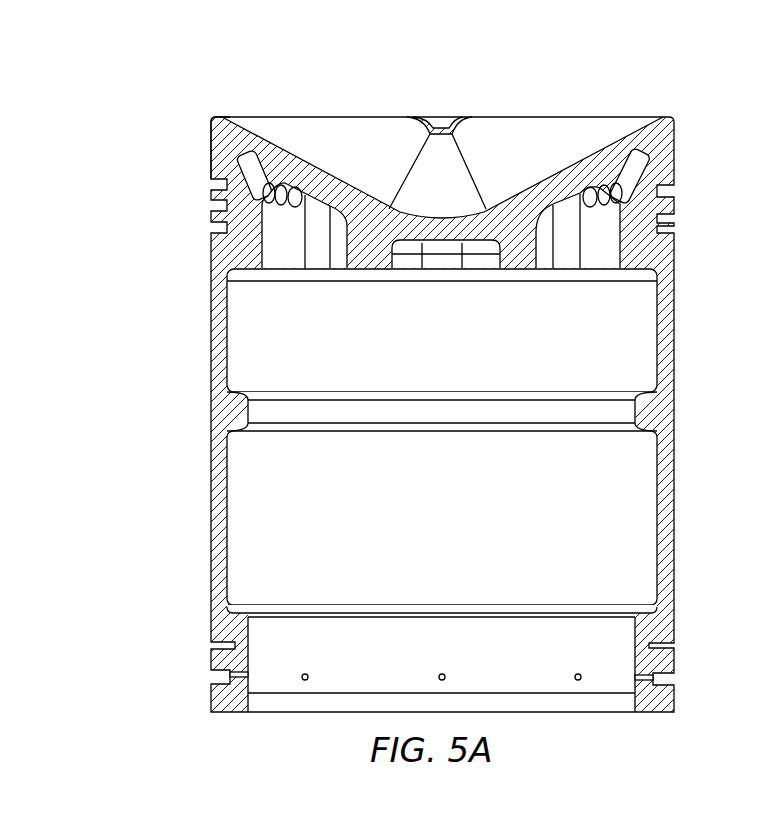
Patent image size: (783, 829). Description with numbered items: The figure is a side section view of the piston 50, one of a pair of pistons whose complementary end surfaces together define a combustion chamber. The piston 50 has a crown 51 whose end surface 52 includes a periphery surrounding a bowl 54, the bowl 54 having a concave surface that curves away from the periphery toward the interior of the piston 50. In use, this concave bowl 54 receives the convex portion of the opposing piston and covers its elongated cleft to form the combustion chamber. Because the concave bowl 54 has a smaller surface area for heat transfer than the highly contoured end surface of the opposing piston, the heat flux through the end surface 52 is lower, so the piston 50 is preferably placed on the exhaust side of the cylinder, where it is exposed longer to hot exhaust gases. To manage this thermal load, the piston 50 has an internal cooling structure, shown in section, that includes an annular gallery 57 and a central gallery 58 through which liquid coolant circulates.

The piston 50 is at (696, 292).
The crown 51 is at (205, 130).
The end surface 52 is at (509, 82).
The bowl 54 is at (360, 126).
The annular gallery 57 is at (600, 234).
The central gallery 58 is at (473, 258).